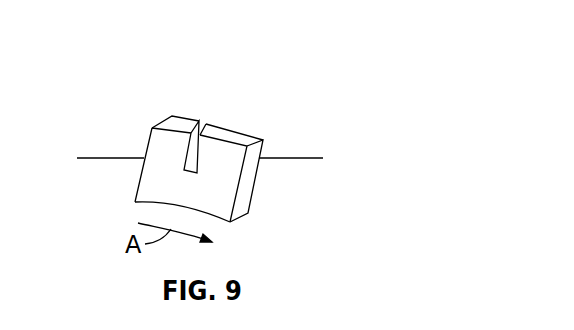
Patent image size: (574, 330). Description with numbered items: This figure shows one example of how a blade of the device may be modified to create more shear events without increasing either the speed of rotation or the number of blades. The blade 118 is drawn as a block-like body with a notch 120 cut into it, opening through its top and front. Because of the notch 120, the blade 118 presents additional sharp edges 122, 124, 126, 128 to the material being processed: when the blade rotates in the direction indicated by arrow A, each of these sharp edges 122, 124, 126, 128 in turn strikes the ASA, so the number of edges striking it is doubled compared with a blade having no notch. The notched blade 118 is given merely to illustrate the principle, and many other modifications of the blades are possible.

The blade 118 is at (137, 63).
The notch 120 is at (210, 128).
The sharp edge 122 is at (236, 203).
The sharp edge 124 is at (257, 175).
The sharp edge 126 is at (186, 148).
The sharp edge 128 is at (207, 127).